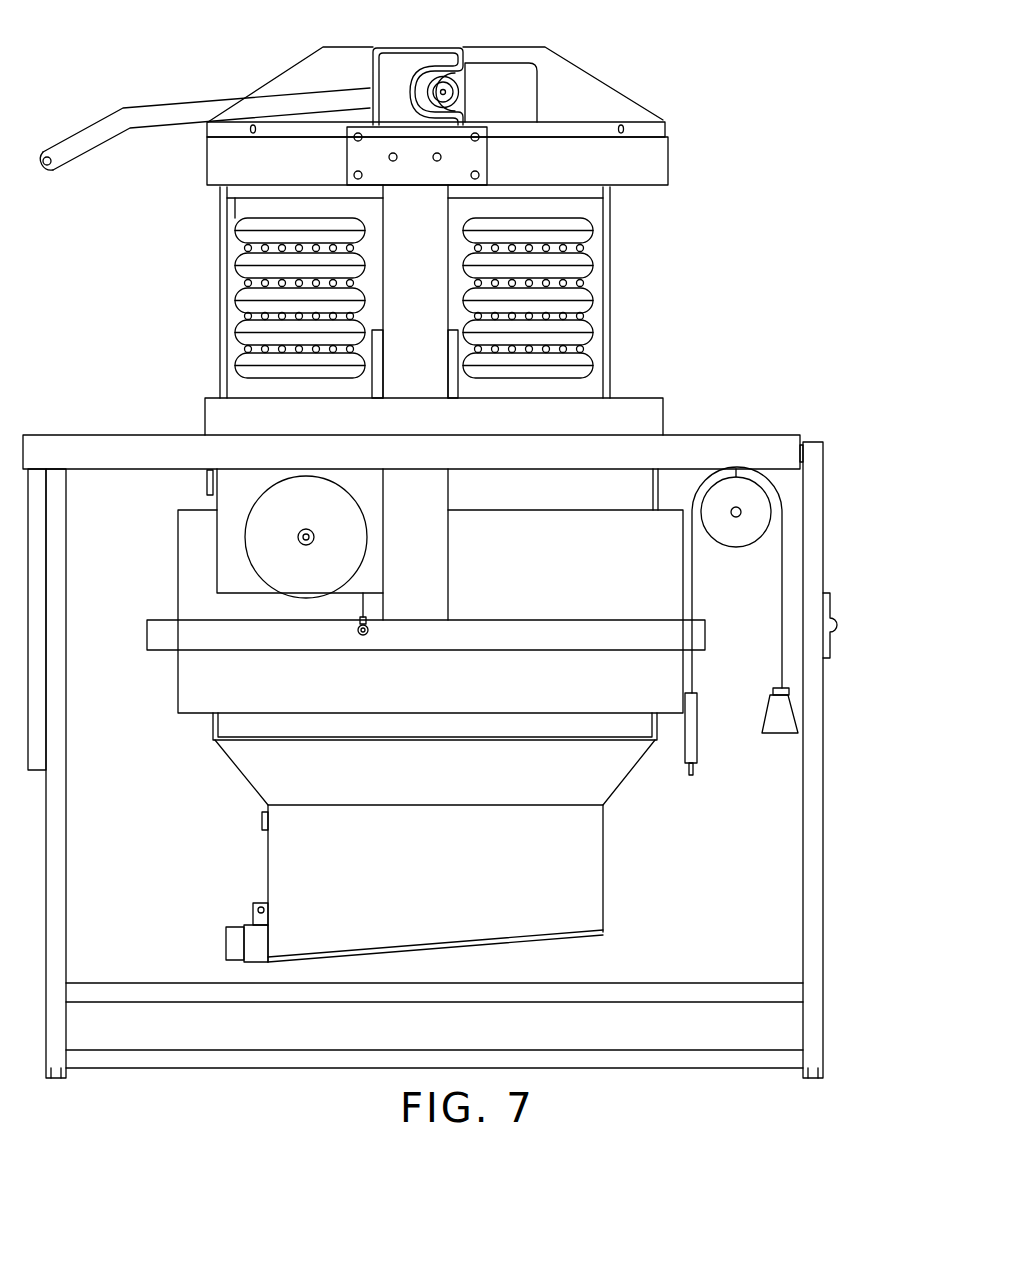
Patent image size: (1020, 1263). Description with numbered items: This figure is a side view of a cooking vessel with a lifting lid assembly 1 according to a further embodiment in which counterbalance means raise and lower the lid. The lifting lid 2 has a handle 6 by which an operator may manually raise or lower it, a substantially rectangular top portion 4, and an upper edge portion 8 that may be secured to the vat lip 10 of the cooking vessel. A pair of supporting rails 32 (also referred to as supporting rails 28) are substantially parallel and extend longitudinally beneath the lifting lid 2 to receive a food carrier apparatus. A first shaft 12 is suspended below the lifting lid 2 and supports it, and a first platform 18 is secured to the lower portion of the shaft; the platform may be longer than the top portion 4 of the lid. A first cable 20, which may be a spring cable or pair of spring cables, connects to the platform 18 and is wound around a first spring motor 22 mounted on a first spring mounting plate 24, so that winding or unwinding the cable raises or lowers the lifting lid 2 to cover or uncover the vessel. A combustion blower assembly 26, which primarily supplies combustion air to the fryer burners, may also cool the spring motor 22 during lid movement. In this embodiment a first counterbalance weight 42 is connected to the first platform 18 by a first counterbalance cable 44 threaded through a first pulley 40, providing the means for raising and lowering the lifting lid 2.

The lifting lid assembly 1 is at (862, 168).
The lifting lid 2 is at (657, 85).
The top portion 4 is at (657, 118).
The handle 6 is at (80, 135).
The upper edge portion 8 is at (636, 398).
The vat lip 10 is at (766, 435).
The first shaft 12 is at (393, 413).
The first platform 18 is at (500, 612).
The first cable 20 is at (363, 605).
The first spring motor 22 is at (258, 558).
The first spring mounting plate 24 is at (228, 497).
The combustion blower assembly 26 is at (832, 610).
The supporting rails 28 is at (208, 313).
The supporting rails 32 is at (585, 200).
The first pulley 40 is at (780, 497).
The first counterbalance weight 42 is at (780, 735).
The first counterbalance cable 44 is at (782, 585).